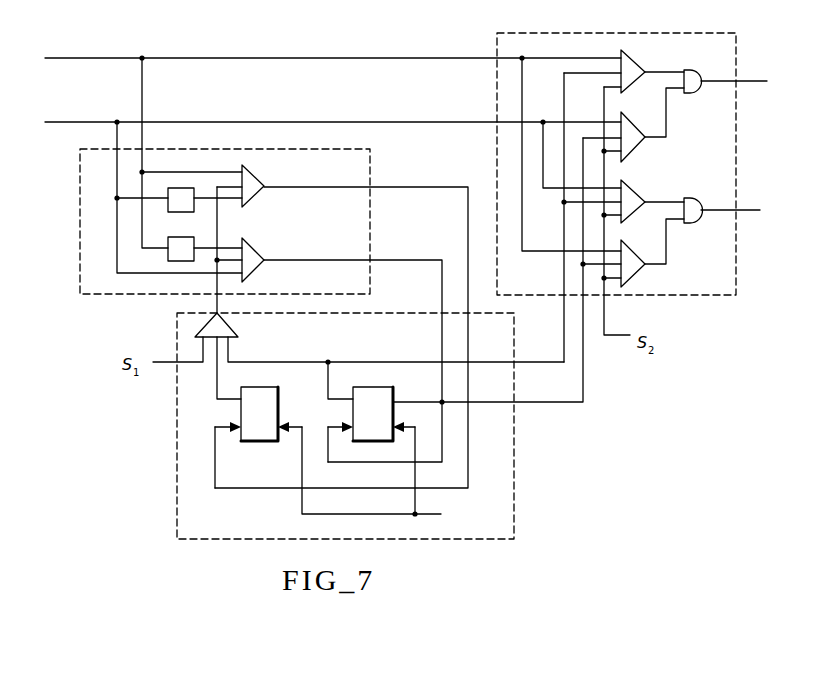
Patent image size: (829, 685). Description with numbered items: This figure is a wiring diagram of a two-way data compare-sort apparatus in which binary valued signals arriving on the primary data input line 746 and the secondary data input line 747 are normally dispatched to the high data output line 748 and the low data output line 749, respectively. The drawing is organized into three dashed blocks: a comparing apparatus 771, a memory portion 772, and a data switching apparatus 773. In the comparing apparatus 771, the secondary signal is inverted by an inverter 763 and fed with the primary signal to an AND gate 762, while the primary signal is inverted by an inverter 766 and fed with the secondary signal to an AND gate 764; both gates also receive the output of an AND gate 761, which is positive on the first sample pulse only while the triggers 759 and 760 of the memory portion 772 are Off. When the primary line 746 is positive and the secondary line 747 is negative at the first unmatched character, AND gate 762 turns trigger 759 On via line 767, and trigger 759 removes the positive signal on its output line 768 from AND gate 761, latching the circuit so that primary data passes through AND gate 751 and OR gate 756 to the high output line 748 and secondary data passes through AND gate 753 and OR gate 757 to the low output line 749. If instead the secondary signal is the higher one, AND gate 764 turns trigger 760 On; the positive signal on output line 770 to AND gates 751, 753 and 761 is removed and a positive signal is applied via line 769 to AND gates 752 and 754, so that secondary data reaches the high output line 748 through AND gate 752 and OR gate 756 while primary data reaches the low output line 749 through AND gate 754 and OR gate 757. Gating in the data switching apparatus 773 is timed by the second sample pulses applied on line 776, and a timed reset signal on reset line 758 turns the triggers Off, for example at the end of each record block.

The primary data input line 746 is at (111, 60).
The secondary data input line 747 is at (108, 125).
The high data output line 748 is at (724, 90).
The low data output line 749 is at (724, 219).
The AND gate 751 is at (623, 60).
The AND gate 752 is at (623, 117).
The AND gate 753 is at (628, 193).
The AND gate 754 is at (623, 250).
The OR gate 756 is at (688, 70).
The OR gate 757 is at (687, 203).
The reset line 758 is at (352, 511).
The trigger 759 is at (254, 396).
The trigger 760 is at (364, 396).
The AND gate 761 is at (232, 334).
The AND gate 762 is at (262, 190).
The inverter 763 is at (188, 214).
The AND gate 764 is at (255, 254).
The inverter 766 is at (168, 255).
The line 767 is at (438, 189).
The output line 768 is at (218, 370).
The line 769 is at (582, 371).
The output line 770 is at (329, 380).
The comparing apparatus 771 is at (80, 218).
The memory portion 772 is at (515, 466).
The data switching apparatus 773 is at (622, 38).
The line 776 is at (605, 323).